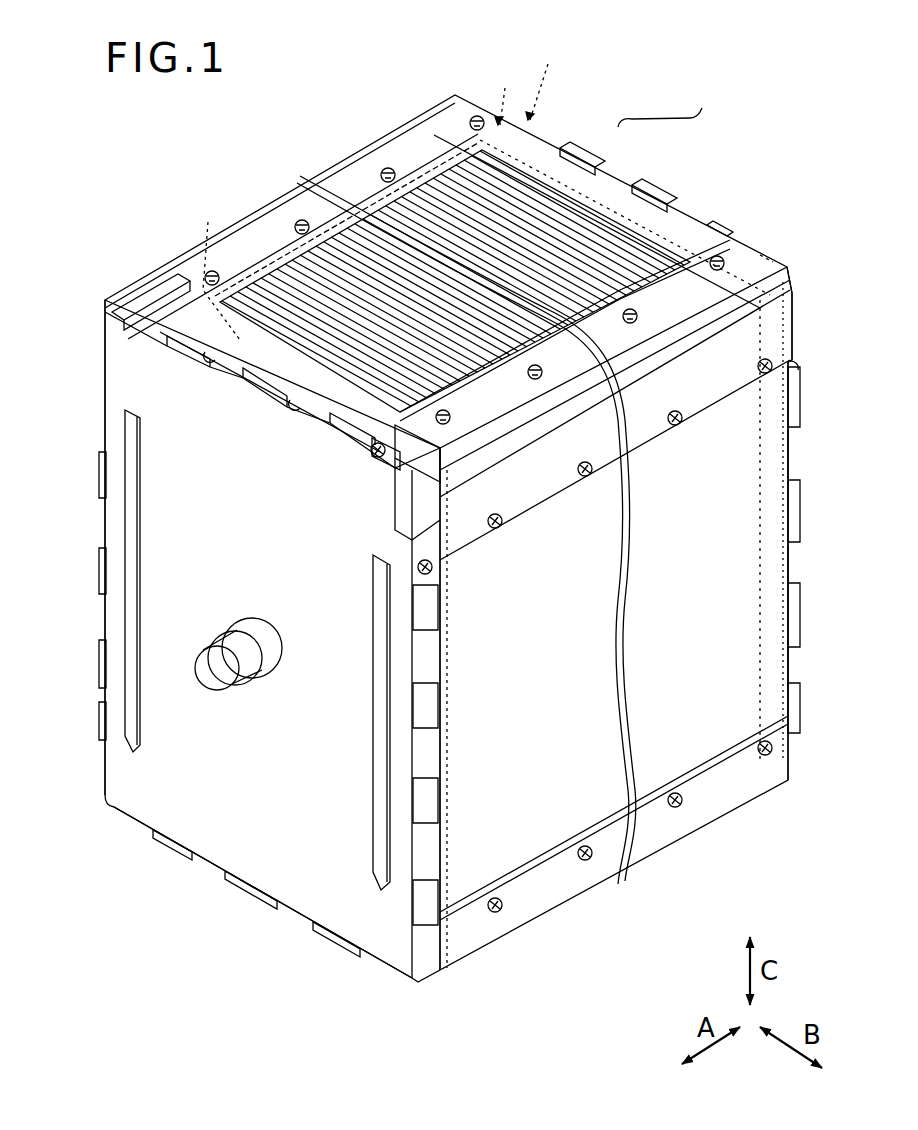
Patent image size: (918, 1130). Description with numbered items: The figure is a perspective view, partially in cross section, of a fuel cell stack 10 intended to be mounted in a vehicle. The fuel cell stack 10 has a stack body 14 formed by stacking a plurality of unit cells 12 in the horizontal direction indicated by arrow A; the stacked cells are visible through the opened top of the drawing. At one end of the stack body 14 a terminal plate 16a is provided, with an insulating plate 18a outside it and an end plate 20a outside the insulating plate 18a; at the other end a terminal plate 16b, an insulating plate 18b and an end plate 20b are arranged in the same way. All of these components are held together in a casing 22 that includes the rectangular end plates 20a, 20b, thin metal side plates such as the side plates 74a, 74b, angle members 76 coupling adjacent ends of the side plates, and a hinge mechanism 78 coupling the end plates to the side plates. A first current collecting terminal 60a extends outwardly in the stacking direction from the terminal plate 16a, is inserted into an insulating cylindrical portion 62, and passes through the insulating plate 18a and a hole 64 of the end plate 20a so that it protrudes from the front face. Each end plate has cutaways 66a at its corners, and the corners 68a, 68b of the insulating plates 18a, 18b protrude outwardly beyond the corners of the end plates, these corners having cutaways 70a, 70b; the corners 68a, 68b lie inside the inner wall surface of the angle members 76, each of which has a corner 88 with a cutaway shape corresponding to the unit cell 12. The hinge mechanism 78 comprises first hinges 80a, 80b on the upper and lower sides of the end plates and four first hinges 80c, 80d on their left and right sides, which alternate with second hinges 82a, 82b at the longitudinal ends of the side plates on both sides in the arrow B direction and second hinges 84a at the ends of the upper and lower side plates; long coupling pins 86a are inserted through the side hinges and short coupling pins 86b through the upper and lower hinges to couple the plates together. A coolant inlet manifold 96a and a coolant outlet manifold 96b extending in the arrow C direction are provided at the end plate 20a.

The fuel cell stack 10 is at (142, 143).
The unit cell 12 is at (605, 218).
The stack body 14 is at (660, 101).
The terminal plate 16a is at (213, 266).
The terminal plate 16b is at (517, 90).
The insulating plate 18a is at (168, 320).
The insulating plate 18b is at (568, 76).
The end plate 20a is at (124, 356).
The end plate 20b is at (803, 307).
The casing 22 is at (455, 84).
The first current collecting terminal 60a is at (210, 687).
The insulating cylindrical portion 62 is at (247, 620).
The hole 64 is at (277, 650).
The cutaway 66a is at (447, 533).
The corner 68a is at (437, 457).
The corner 68b is at (763, 277).
The cutaway 70a is at (457, 477).
The cutaway 70b is at (786, 292).
The side plate 74a is at (700, 750).
The side plate 74b is at (290, 260).
The angle member 76 is at (424, 123).
The hinge mechanism 78 is at (347, 455).
The first hinge 80a is at (218, 370).
The first hinge 80b is at (591, 150).
The first hinge 80c is at (427, 605).
The first hinge 80d is at (797, 404).
The second hinge 82a is at (427, 655).
The second hinge 82b is at (100, 572).
The second hinge 84a is at (267, 390).
The long coupling pin 86a is at (433, 567).
The short coupling pin 86b is at (382, 458).
The corner 88 is at (344, 170).
The coolant inlet manifold 96a is at (133, 545).
The coolant outlet manifold 96b is at (377, 720).